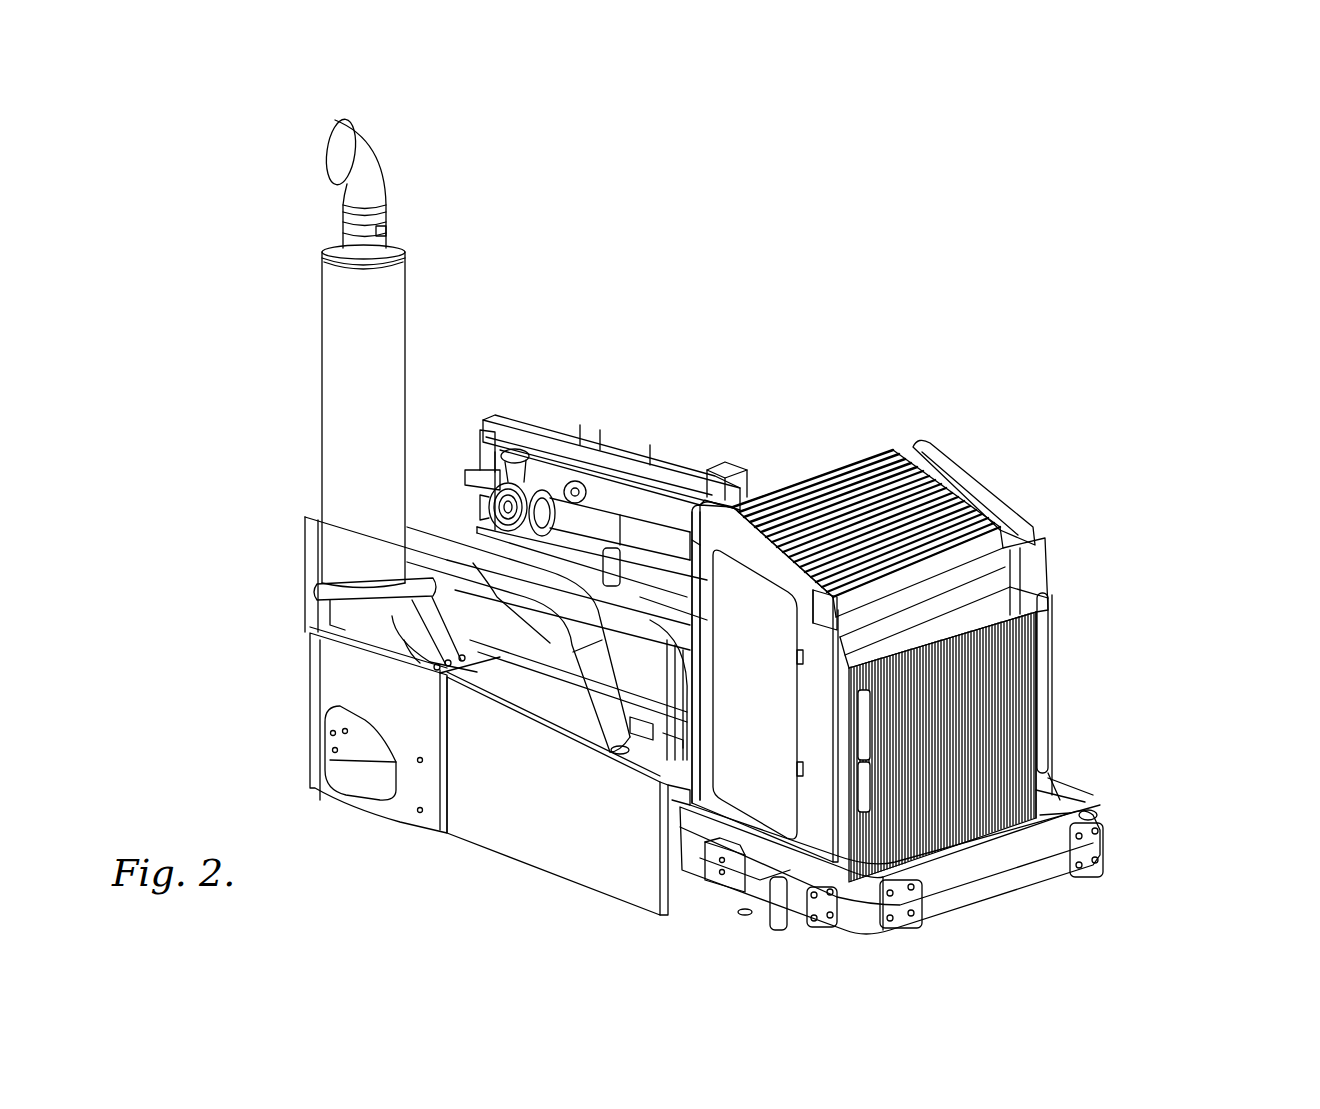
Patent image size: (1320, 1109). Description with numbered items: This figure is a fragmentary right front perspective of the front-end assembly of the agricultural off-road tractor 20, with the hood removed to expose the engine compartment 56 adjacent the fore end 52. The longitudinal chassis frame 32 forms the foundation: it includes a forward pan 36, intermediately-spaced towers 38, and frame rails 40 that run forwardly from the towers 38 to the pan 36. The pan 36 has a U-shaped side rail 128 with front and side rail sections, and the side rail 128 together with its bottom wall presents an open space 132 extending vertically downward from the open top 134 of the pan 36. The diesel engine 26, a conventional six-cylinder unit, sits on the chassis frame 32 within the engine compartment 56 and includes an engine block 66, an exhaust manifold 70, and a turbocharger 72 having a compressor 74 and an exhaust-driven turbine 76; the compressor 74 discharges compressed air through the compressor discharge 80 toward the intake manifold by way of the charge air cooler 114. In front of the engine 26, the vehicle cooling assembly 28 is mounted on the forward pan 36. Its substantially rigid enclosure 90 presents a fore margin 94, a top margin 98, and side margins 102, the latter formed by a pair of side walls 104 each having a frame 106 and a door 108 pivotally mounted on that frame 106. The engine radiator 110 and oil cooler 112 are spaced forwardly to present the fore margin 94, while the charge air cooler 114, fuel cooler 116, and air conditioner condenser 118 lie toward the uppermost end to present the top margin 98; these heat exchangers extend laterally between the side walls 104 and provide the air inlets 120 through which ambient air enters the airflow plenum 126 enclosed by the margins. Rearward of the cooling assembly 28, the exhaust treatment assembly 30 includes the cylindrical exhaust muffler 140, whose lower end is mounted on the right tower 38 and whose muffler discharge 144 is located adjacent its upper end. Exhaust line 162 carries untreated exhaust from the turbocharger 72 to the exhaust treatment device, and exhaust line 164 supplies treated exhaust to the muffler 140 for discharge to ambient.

The tractor 20 is at (790, 265).
The diesel engine 26 is at (660, 435).
The vehicle cooling assembly 28 is at (1020, 528).
The exhaust treatment assembly 30 is at (440, 535).
The chassis frame 32 is at (668, 908).
The forward pan 36 is at (875, 930).
The towers 38 is at (325, 778).
The frame rails 40 is at (545, 848).
The fore end 52 is at (1205, 710).
The engine compartment 56 is at (880, 345).
The engine block 66 is at (560, 642).
The exhaust manifold 70 is at (587, 563).
The turbocharger 72 is at (530, 490).
The compressor 74 is at (480, 470).
The turbine 76 is at (545, 505).
The compressor discharge 80 is at (520, 470).
The enclosure 90 is at (1012, 548).
The fore margin 94 is at (1055, 697).
The top margin 98 is at (925, 415).
The side margins 102 is at (700, 762).
The side walls 104 is at (710, 508).
The frame 106 is at (695, 555).
The door 108 is at (762, 725).
The engine radiator 110 is at (1000, 612).
The oil cooler 112 is at (1030, 672).
The charge air cooler 114 is at (1000, 567).
The fuel cooler 116 is at (875, 455).
The air conditioner condenser 118 is at (985, 500).
The air inlets 120 is at (850, 470).
The airflow plenum 126 is at (1000, 587).
The side rail 128 is at (1100, 830).
The open space 132 is at (735, 912).
The open top 134 is at (1060, 795).
The exhaust muffler 140 is at (345, 346).
The muffler discharge 144 is at (350, 155).
The exhaust line 162 is at (630, 530).
The exhaust line 164 is at (605, 705).